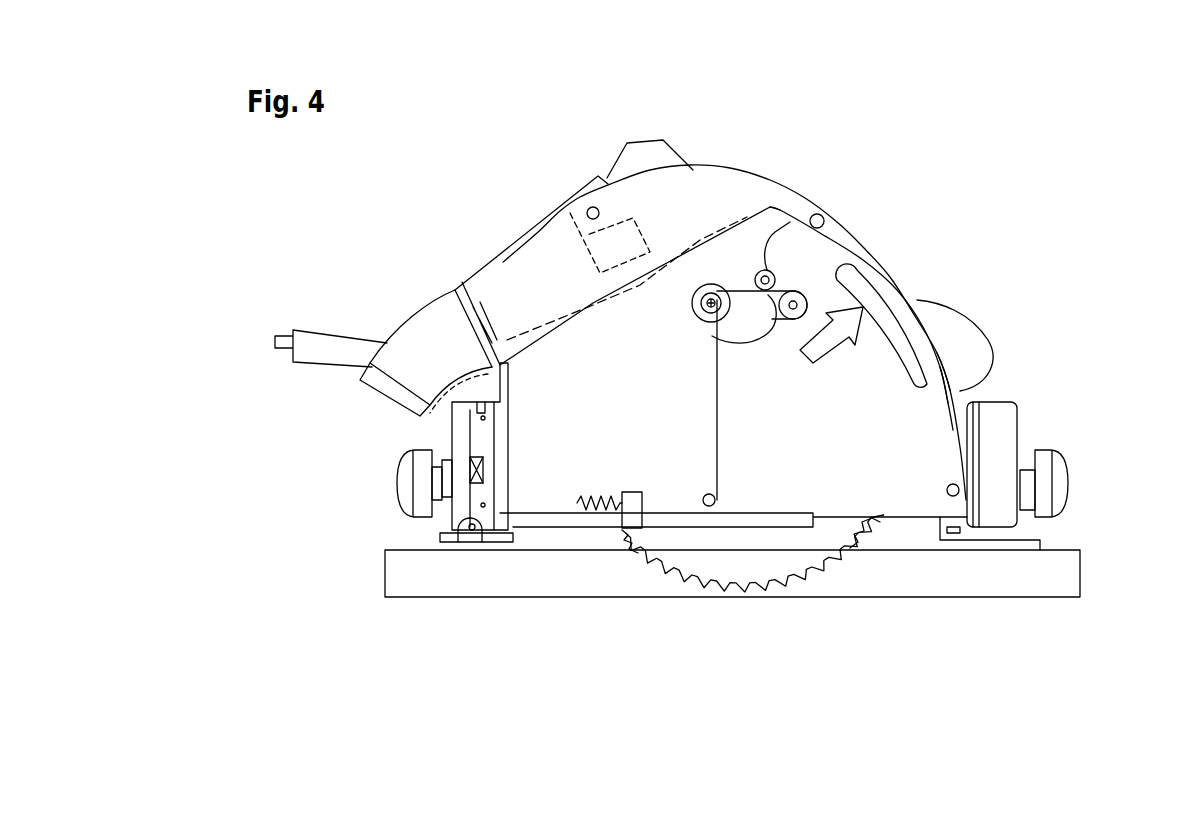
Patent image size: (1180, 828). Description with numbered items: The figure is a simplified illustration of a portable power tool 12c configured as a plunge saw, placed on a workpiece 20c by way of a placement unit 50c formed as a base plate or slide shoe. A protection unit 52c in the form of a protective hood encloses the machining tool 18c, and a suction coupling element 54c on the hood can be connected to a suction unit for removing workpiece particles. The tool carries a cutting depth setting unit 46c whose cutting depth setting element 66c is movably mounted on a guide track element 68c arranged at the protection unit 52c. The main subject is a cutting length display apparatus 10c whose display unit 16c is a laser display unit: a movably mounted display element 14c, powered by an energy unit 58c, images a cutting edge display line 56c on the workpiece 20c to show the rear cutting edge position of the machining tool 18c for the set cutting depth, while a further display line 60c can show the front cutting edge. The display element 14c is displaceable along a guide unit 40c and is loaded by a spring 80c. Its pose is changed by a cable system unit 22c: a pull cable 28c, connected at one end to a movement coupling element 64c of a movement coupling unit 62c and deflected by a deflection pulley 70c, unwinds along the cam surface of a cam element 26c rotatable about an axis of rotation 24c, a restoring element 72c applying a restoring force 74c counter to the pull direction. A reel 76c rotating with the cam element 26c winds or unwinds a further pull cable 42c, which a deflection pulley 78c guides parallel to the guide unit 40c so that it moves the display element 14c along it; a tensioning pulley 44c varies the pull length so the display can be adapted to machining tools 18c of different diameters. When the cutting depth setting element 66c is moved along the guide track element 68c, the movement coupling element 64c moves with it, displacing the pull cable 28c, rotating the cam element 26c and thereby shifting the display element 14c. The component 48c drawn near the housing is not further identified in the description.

The cutting length display apparatus 10c is at (615, 398).
The portable power tool 12c is at (1083, 198).
The display element 14c is at (645, 500).
The display unit 16c is at (755, 440).
The machining tool 18c is at (787, 573).
The workpiece 20c is at (1043, 583).
The cable system unit 22c is at (807, 250).
The axis of rotation 24c is at (693, 300).
The cam element 26c is at (733, 327).
The pull cable 28c is at (737, 289).
The guide unit 40c is at (603, 468).
The further pull cable 42c is at (715, 434).
The tensioning pulley 44c is at (800, 203).
The cutting depth setting unit 46c is at (962, 278).
The handle tab 48c is at (643, 200).
The placement unit 50c is at (463, 543).
The protection unit 52c is at (935, 452).
The suction coupling element 54c is at (413, 320).
The cutting edge display line 56c is at (633, 543).
The energy unit 58c is at (562, 210).
The cutting edge display line 60c is at (863, 550).
The movement coupling unit 62c is at (882, 274).
The movement coupling element 64c is at (823, 347).
The cutting depth setting element 66c is at (990, 354).
The guide track element 68c is at (920, 388).
The deflection pulley 70c is at (783, 318).
The restoring element 72c is at (713, 340).
The restoring force 74c is at (693, 337).
The reel 76c is at (710, 293).
The deflection pulley 78c is at (716, 500).
The spring 80c is at (567, 513).